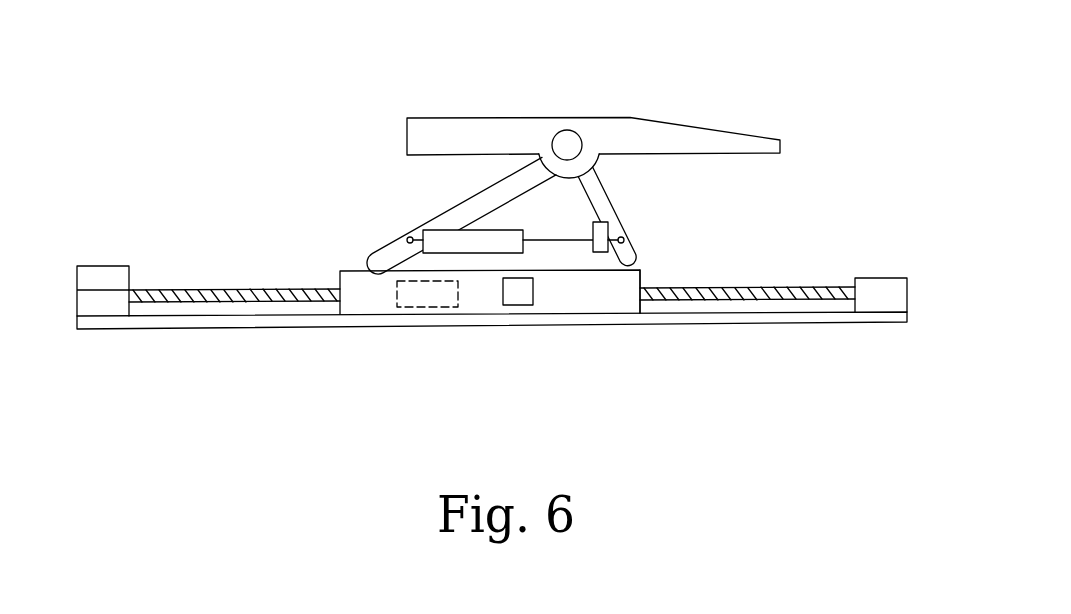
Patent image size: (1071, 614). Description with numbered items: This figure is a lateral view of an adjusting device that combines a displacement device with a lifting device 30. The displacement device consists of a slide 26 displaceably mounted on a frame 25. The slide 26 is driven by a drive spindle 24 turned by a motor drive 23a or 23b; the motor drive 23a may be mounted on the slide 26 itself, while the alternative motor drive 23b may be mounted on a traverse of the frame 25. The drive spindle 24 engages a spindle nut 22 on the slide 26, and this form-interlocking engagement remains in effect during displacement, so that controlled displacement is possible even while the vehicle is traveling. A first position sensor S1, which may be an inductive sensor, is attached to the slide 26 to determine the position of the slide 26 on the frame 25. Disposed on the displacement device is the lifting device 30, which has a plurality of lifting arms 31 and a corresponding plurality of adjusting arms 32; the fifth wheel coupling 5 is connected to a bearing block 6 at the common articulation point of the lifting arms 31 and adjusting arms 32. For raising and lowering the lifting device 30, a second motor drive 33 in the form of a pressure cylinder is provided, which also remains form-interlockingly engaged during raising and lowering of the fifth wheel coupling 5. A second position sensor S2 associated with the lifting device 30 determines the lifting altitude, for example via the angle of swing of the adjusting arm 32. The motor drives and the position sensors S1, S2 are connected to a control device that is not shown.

The fifth wheel coupling 5 is at (627, 130).
The bearing block 6 is at (550, 162).
The spindle nut 22 is at (575, 292).
The motor drive 23a is at (412, 295).
The motor drive 23b is at (110, 275).
The drive spindle 24 is at (800, 288).
The frame 25 is at (783, 314).
The slide 26 is at (628, 305).
The lifting device 30 is at (378, 184).
The lifting arm 31 is at (470, 203).
The adjusting arm 32 is at (608, 197).
The second motor drive 33 is at (485, 253).
The first position sensor S1 is at (517, 293).
The second position sensor S2 is at (612, 221).